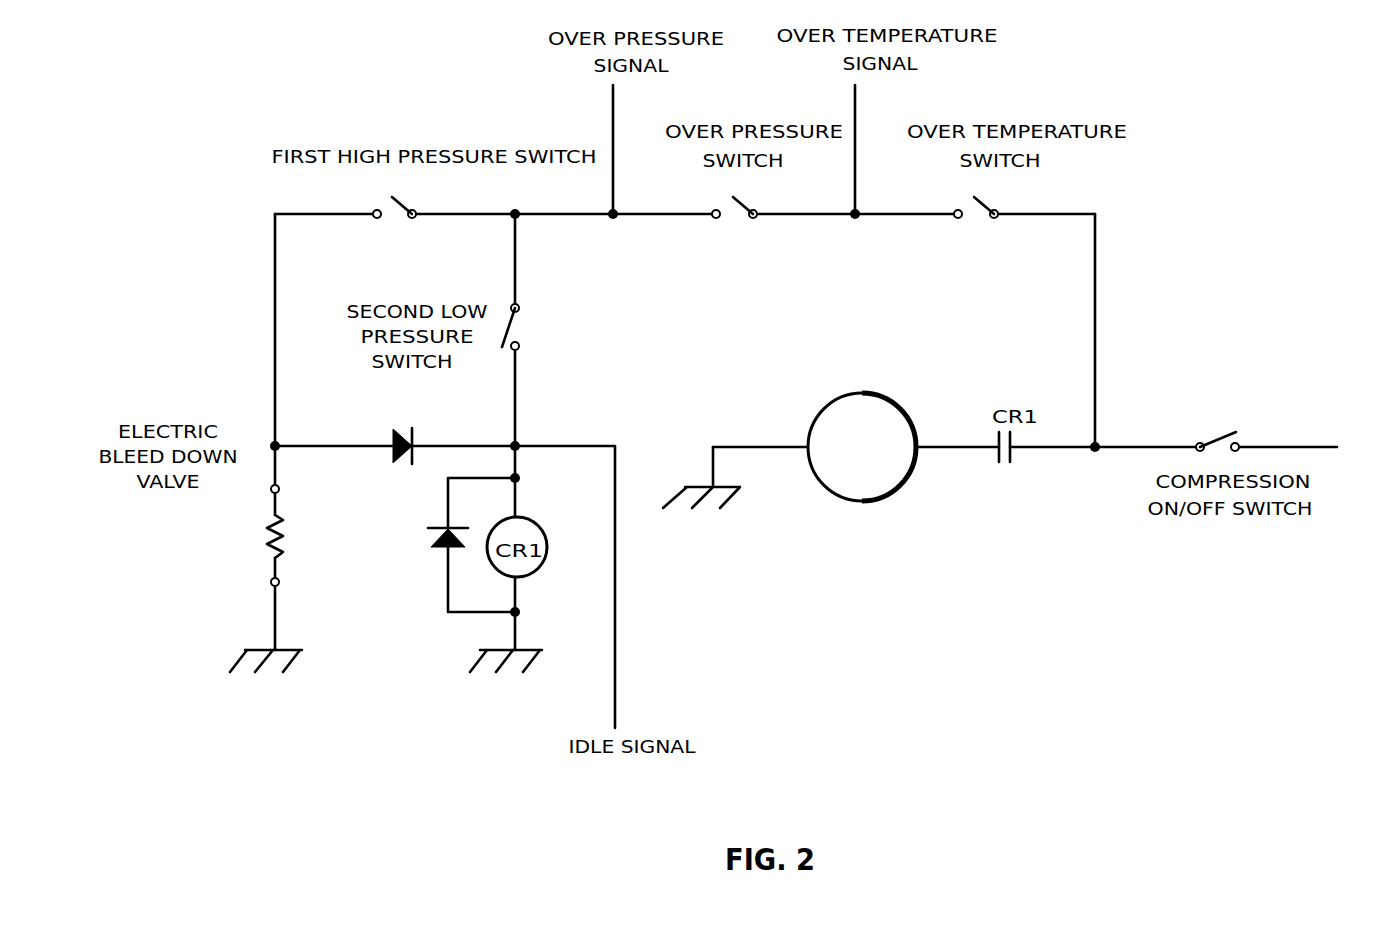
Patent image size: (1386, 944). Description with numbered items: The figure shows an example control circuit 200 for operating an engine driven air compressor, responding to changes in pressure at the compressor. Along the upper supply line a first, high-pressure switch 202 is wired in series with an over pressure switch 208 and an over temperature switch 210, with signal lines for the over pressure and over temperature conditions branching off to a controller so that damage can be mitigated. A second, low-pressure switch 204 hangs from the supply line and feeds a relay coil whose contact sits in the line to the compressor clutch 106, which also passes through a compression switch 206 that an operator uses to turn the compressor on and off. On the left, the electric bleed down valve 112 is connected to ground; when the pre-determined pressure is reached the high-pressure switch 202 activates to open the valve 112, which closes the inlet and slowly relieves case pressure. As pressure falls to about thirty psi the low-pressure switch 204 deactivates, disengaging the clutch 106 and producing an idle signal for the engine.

The control circuit 200 is at (1087, 66).
The high-pressure switch 202 is at (407, 210).
The low-pressure switch 204 is at (521, 305).
The compression switch 206 is at (1205, 438).
The over pressure switch 208 is at (748, 210).
The over temperature switch 210 is at (992, 210).
The clutch 106 is at (880, 397).
The electric bleed down valve 112 is at (255, 530).